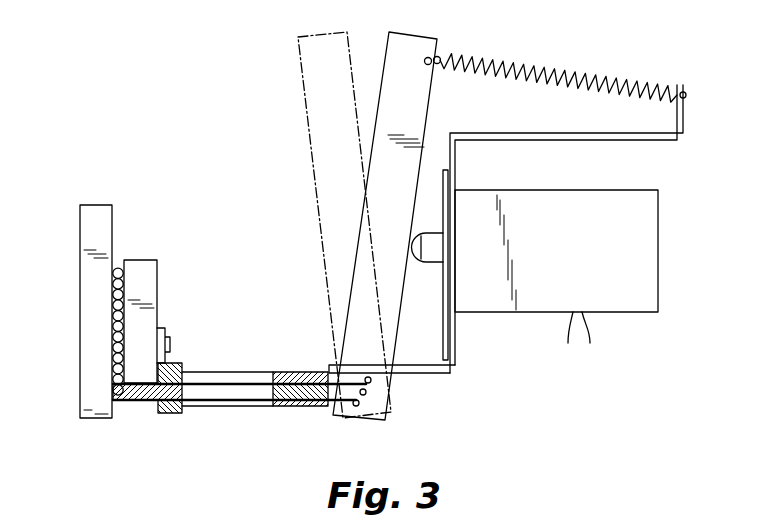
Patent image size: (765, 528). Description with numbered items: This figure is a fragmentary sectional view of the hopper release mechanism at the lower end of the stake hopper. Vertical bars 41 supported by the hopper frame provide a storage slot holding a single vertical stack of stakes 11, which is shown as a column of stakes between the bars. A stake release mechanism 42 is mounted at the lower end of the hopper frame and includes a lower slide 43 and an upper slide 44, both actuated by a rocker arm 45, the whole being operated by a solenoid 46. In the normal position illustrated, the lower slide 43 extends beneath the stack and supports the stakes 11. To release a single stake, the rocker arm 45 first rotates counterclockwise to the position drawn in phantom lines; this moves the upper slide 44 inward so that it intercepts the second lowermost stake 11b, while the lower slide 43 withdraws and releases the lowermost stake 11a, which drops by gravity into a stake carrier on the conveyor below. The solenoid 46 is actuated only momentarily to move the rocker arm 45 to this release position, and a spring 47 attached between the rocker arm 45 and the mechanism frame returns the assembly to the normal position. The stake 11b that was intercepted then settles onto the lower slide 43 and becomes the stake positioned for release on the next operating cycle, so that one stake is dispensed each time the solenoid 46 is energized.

The vertical bars 41 is at (90, 222).
The stakes 11 is at (117, 296).
The lowermost stake 11a is at (115, 390).
The second lowermost stake 11b is at (115, 378).
The stake release mechanism 42 is at (281, 151).
The lower slide 43 is at (237, 403).
The upper slide 44 is at (238, 380).
The rocker arm 45 is at (307, 82).
The solenoid 46 is at (643, 233).
The spring 47 is at (608, 84).